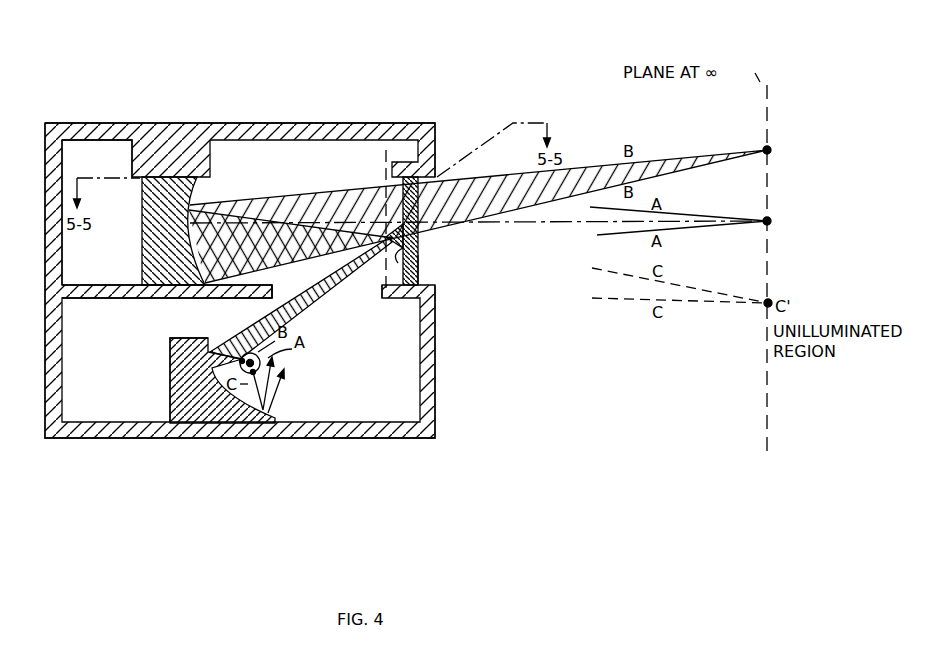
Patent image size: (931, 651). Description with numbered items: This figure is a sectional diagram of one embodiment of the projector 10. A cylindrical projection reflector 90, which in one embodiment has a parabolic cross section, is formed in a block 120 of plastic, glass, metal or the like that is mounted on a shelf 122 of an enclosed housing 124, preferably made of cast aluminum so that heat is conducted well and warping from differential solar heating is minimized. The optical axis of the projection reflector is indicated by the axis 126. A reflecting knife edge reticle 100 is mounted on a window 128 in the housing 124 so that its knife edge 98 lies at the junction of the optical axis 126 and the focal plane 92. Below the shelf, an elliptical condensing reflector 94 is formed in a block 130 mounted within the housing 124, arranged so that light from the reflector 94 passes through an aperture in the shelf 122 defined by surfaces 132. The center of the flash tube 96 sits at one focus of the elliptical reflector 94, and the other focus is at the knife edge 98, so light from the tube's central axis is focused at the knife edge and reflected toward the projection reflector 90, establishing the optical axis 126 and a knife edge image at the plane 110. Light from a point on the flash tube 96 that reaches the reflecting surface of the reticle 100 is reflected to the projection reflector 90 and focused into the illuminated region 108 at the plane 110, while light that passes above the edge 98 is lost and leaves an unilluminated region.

The optical sighting device 10 is at (438, 121).
The cylindrical projection reflector 90 is at (160, 178).
The focal plane 92 is at (374, 166).
The elliptical condensing reflector 94 is at (184, 424).
The flash tube 96 is at (290, 361).
The knife edge 98 is at (388, 232).
The reflecting knife edge reticle 100 is at (418, 252).
The illuminated region 108 is at (821, 186).
The plane 110 is at (769, 452).
The block 120 is at (140, 245).
The shelf 122 is at (112, 300).
The housing 124 is at (52, 120).
The optical axis 126 is at (502, 222).
The window 128 is at (418, 268).
The block 130 is at (168, 362).
The surfaces 132 is at (273, 293).